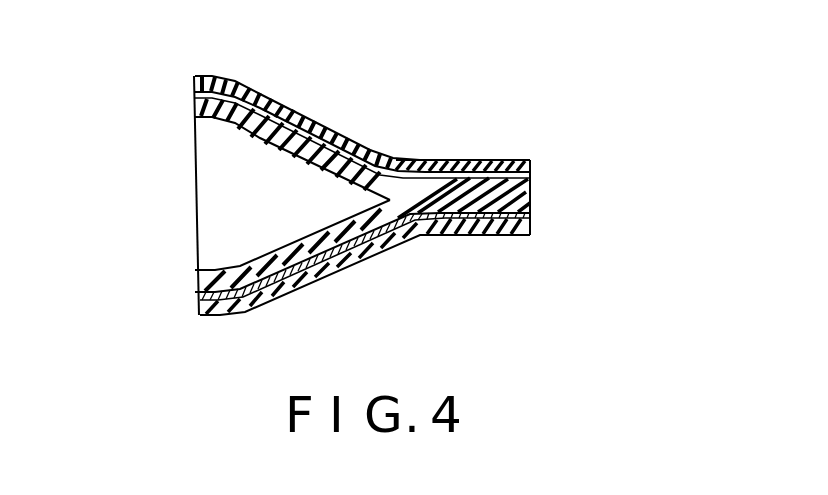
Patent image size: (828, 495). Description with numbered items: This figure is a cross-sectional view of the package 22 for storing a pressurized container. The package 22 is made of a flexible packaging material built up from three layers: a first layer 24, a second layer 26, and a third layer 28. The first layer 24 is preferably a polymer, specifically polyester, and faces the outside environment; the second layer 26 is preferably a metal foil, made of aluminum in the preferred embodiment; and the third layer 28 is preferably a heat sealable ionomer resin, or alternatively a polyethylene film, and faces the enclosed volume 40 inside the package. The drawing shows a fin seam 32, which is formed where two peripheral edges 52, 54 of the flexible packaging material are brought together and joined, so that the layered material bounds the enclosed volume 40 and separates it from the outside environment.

The package 22 is at (293, 100).
The first layer 24 is at (513, 163).
The second layer 26 is at (530, 215).
The third layer 28 is at (527, 189).
The fin seams 32 is at (430, 157).
The enclosed volume 40 is at (235, 203).
The peripheral edge 52 is at (172, 77).
The peripheral edge 54 is at (172, 270).